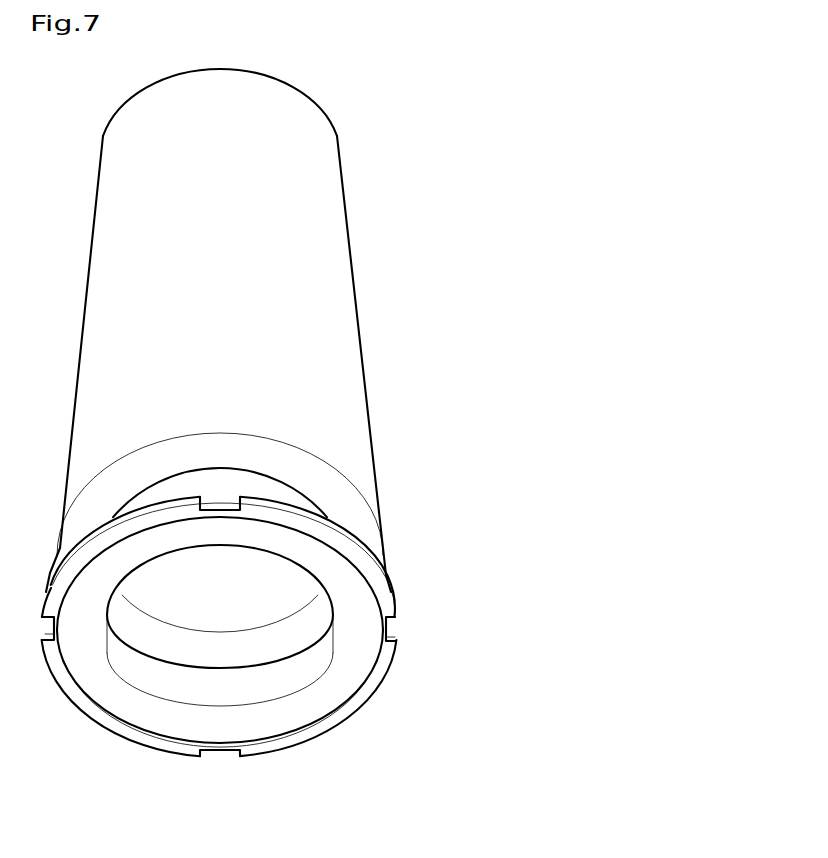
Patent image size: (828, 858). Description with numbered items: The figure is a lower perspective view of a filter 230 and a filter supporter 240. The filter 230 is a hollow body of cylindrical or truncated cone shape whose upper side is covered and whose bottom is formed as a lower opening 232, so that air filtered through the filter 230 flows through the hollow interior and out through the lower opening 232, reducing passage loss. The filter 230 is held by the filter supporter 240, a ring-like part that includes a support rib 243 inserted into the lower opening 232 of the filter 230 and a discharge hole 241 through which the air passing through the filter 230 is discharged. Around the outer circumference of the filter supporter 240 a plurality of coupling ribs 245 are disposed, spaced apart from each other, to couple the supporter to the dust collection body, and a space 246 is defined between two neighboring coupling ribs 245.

The filter 230 is at (354, 301).
The lower opening 232 is at (220, 472).
The filter supporter 240 is at (338, 678).
The discharge hole 241 is at (300, 705).
The support rib 243 is at (215, 693).
The coupling ribs 245 is at (385, 668).
The space 246 is at (392, 627).